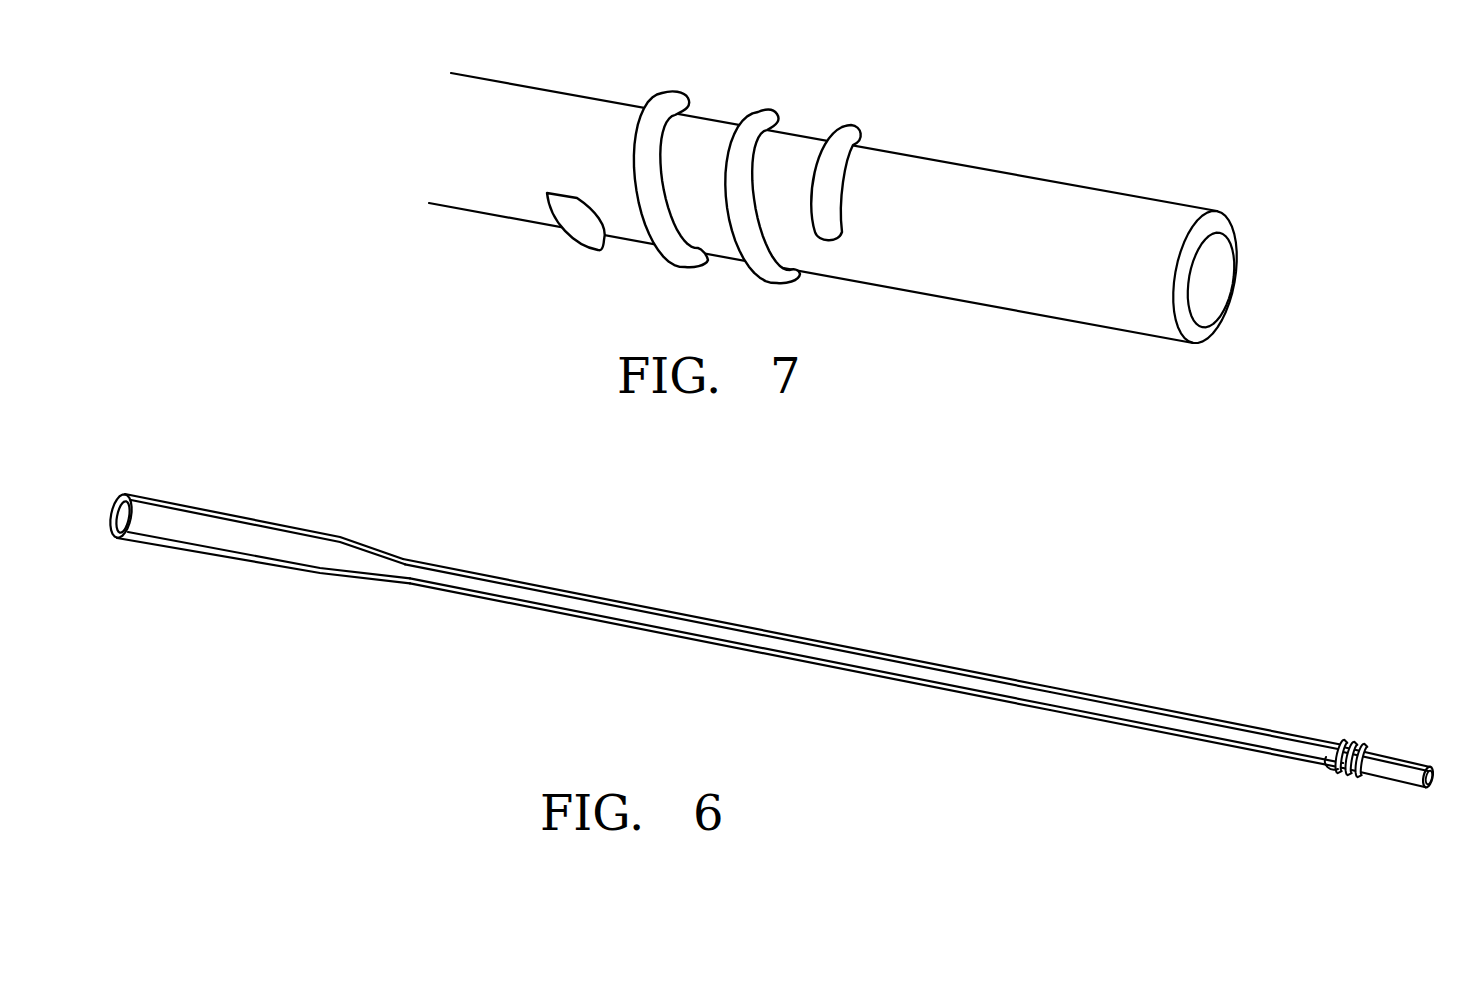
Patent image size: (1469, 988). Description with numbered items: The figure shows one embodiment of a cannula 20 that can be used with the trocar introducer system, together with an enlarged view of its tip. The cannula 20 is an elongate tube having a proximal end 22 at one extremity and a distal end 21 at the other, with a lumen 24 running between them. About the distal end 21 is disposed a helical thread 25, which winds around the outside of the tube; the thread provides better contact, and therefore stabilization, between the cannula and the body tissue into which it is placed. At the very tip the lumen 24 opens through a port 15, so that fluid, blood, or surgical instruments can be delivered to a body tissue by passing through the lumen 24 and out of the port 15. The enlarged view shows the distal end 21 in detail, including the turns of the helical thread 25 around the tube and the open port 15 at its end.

In FIG. 7, the port 15 is at (1212, 280).
In FIG. 6, the port 15 is at (1436, 778).
In FIG. 6, the cannula 20 is at (770, 628).
In FIG. 6, the distal end 21 is at (1413, 757).
In FIG. 6, the proximal end 22 is at (158, 496).
In FIG. 6, the lumen 24 is at (1053, 698).
In FIG. 7, the helical thread 25 is at (757, 110).
In FIG. 6, the helical thread 25 is at (1353, 743).